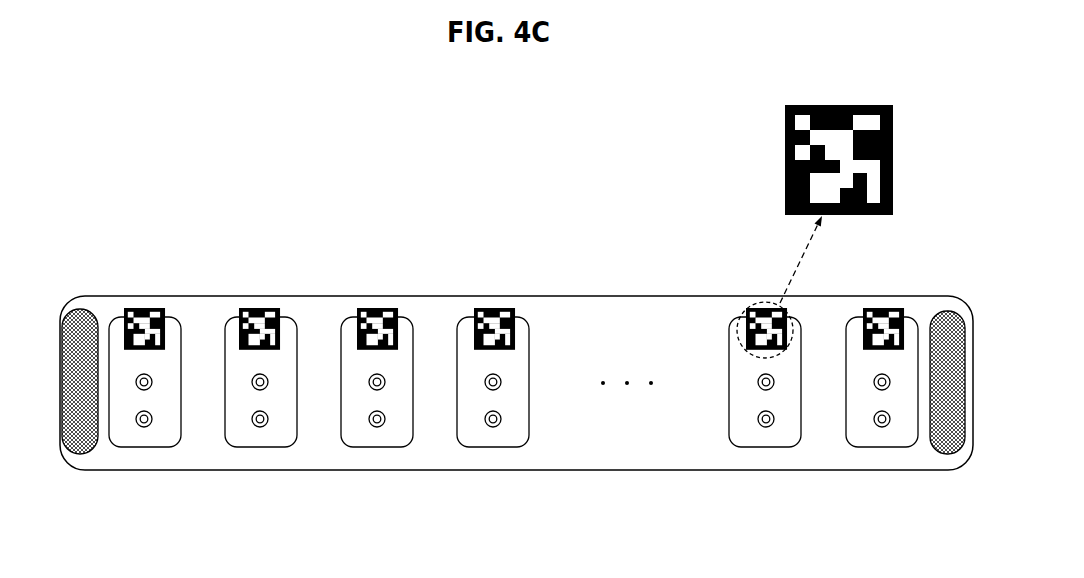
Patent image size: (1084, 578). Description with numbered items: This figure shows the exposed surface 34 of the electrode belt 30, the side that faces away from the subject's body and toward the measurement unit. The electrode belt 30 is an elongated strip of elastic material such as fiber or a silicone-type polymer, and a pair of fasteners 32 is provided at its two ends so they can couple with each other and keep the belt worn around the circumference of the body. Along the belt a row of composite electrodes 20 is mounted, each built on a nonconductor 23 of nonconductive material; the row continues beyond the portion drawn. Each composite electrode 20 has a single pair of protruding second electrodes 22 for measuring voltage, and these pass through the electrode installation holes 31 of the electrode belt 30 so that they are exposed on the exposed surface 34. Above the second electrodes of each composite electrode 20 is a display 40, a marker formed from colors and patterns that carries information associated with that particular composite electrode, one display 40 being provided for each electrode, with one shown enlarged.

The composite electrode 20 is at (243, 448).
The second electrode 22 is at (382, 388).
The nonconductor 23 is at (493, 437).
The electrode belt 30 is at (212, 300).
The electrode installation hole 31 is at (268, 386).
The fastener 32 is at (82, 308).
The exposed surface 34 is at (613, 308).
The display 40 is at (477, 308).